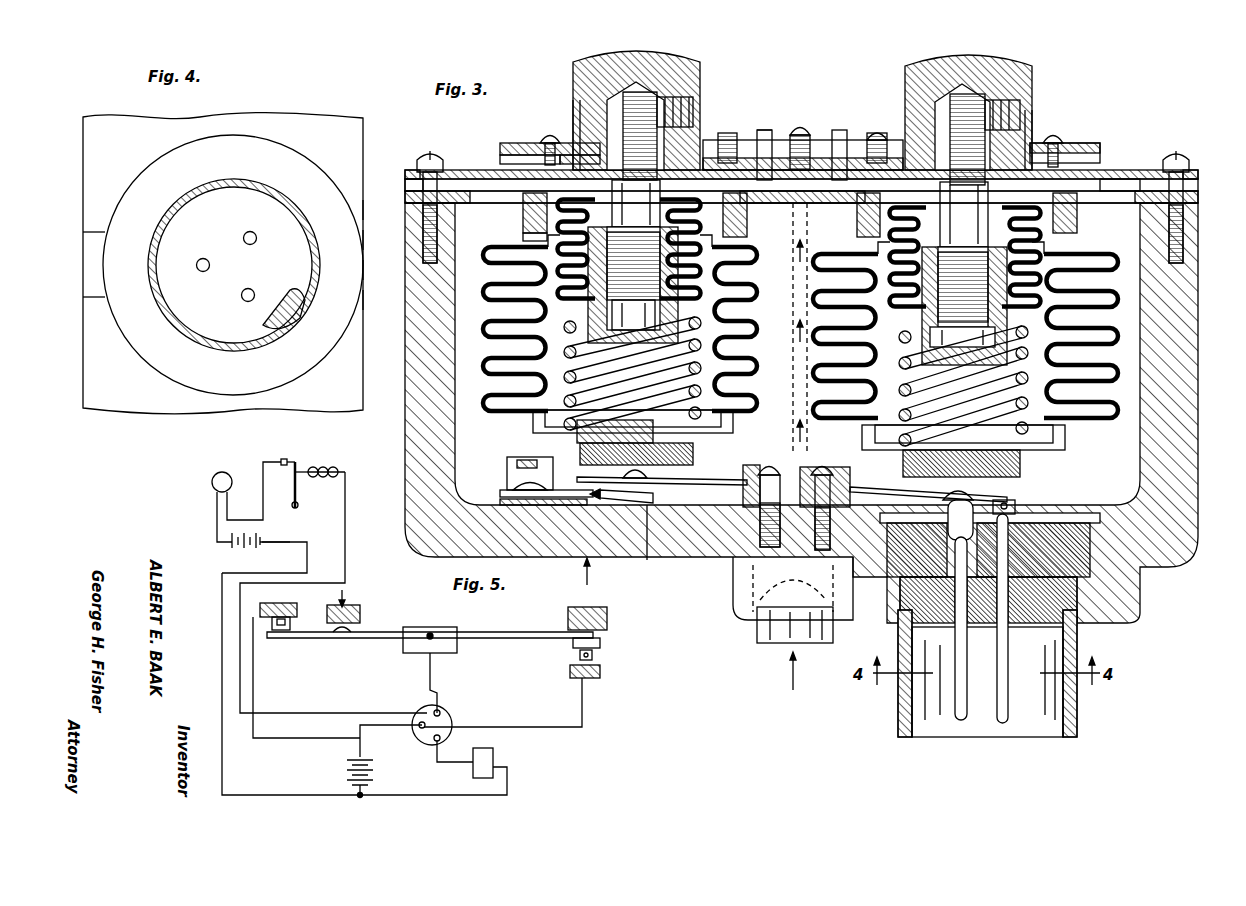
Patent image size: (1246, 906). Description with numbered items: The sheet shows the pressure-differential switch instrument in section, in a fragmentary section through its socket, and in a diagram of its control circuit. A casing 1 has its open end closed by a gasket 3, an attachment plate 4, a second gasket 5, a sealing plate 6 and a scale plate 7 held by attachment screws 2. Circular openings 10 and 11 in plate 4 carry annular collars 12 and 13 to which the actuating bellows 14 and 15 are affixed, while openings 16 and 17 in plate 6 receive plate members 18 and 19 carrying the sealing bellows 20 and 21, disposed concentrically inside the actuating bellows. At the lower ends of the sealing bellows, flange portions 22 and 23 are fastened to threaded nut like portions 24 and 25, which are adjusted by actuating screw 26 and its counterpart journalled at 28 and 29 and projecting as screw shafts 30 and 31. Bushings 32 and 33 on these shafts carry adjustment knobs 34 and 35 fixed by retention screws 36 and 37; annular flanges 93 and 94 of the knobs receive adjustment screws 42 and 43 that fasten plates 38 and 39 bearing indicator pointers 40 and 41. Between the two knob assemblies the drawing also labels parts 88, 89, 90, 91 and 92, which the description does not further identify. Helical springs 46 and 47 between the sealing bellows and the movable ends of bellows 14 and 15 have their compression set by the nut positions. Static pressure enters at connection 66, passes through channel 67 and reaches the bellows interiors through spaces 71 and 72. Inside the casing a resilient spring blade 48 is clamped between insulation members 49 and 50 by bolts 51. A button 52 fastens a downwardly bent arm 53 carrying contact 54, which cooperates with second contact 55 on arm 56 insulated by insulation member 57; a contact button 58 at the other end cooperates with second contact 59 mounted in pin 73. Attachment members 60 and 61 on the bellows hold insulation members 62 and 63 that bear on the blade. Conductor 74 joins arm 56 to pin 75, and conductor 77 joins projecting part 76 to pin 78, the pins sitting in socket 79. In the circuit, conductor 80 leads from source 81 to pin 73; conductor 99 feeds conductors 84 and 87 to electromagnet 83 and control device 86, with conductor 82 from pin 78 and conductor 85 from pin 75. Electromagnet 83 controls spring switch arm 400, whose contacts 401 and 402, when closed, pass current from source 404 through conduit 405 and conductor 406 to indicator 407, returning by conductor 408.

In FIG. 3, the casing 1 is at (1185, 320).
In FIG. 4, the casing 1 is at (118, 403).
In FIG. 3, the attachment screws 2 is at (428, 158).
In FIG. 3, the gasket 3 is at (405, 210).
In FIG. 4, the gasket 3 is at (233, 265).
In FIG. 3, the attachment plate 4 is at (405, 198).
In FIG. 3, the second gasket 5 is at (405, 185).
In FIG. 3, the sealing plate 6 is at (405, 174).
In FIG. 3, the scale plate 7 is at (410, 170).
In FIG. 3, the circular opening 10 is at (520, 170).
In FIG. 3, the circular opening 11 is at (1110, 182).
In FIG. 3, the annular collar 12 is at (523, 205).
In FIG. 3, the annular collar 13 is at (1077, 215).
In FIG. 3, the actuating bellows 14 is at (490, 392).
In FIG. 3, the actuating bellows 15 is at (1100, 422).
In FIG. 3, the circular opening 16 is at (636, 203).
In FIG. 3, the circular opening 17 is at (964, 214).
In FIG. 3, the plate member 18 is at (710, 140).
In FIG. 3, the plate member 19 is at (882, 134).
In FIG. 3, the sealing bellows 20 is at (698, 258).
In FIG. 3, the sealing bellows 21 is at (893, 262).
In FIG. 3, the annular flange portion 22 is at (556, 290).
In FIG. 3, the annular flange portion 23 is at (1068, 320).
In FIG. 3, the nut like portion 24 is at (590, 355).
In FIG. 3, the nut like portion 25 is at (930, 360).
In FIG. 3, the actuating screw 26 is at (588, 238).
In FIG. 3, the journal 28 is at (575, 120).
In FIG. 3, the journal 29 is at (1028, 140).
In FIG. 3, the screw shaft 30 is at (660, 97).
In FIG. 3, the screw shaft 31 is at (988, 102).
In FIG. 3, the bushing 32 is at (620, 110).
In FIG. 3, the bushing 33 is at (948, 115).
In FIG. 3, the adjustment knob 34 is at (612, 58).
In FIG. 3, the adjustment knob 35 is at (945, 60).
In FIG. 3, the retention screw 36 is at (693, 105).
In FIG. 3, the retention screw 37 is at (1020, 110).
In FIG. 3, the plate 38 is at (548, 132).
In FIG. 3, the plate 39 is at (1055, 132).
In FIG. 3, the indicator pointer 40 is at (505, 146).
In FIG. 3, the indicator pointer 41 is at (1090, 160).
In FIG. 3, the adjustment screw 42 is at (765, 130).
In FIG. 3, the adjustment screw 43 is at (1070, 143).
In FIG. 3, the helical spring 46 is at (545, 343).
In FIG. 3, the helical spring 47 is at (1066, 360).
In FIG. 3, the resilient spring blade 48 is at (710, 479).
In FIG. 5, the resilient spring blade 48 is at (505, 631).
In FIG. 3, the insulation member 49 is at (743, 493).
In FIG. 3, the insulation member 50 is at (850, 472).
In FIG. 3, the bolts 51 is at (770, 460).
In FIG. 3, the button 52 is at (655, 497).
In FIG. 3, the downwardly bent arm 53 is at (580, 487).
In FIG. 3, the contact 54 is at (515, 486).
In FIG. 5, the contact 54 is at (285, 630).
In FIG. 3, the second contact 55 is at (510, 468).
In FIG. 5, the second contact 55 is at (288, 606).
In FIG. 3, the arm 56 is at (523, 456).
In FIG. 3, the insulation member 57 is at (500, 494).
In FIG. 3, the contact button 58 is at (975, 494).
In FIG. 5, the contact button 58 is at (600, 644).
In FIG. 3, the second contact 59 is at (1015, 508).
In FIG. 5, the second contact 59 is at (593, 657).
In FIG. 3, the attachment member 60 is at (695, 452).
In FIG. 3, the attachment member 61 is at (903, 462).
In FIG. 3, the insulation member 62 is at (680, 450).
In FIG. 3, the insulation member 63 is at (1005, 490).
In FIG. 3, the static pressure connection 66 is at (757, 628).
In FIG. 3, the channel 67 is at (733, 578).
In FIG. 3, the space 71 is at (535, 222).
In FIG. 3, the space 72 is at (857, 215).
In FIG. 3, the pin 73 is at (960, 722).
In FIG. 4, the pin 73 is at (202, 258).
In FIG. 5, the pin 73 is at (425, 724).
In FIG. 3, the electrical conductor 74 is at (647, 562).
In FIG. 5, the electrical conductor 74 is at (270, 738).
In FIG. 4, the pin 75 is at (250, 231).
In FIG. 5, the pin 75 is at (435, 740).
In FIG. 5, the projecting part 76 is at (432, 632).
In FIG. 3, the electrical conductor 77 is at (980, 510).
In FIG. 5, the electrical conductor 77 is at (432, 668).
In FIG. 3, the pin 78 is at (1003, 725).
In FIG. 4, the pin 78 is at (241, 296).
In FIG. 5, the pin 78 is at (440, 710).
In FIG. 3, the socket 79 is at (1077, 637).
In FIG. 4, the socket 79 is at (240, 195).
In FIG. 5, the electrical conductor 80 is at (375, 725).
In FIG. 5, the source of electrical energy 81 is at (373, 775).
In FIG. 5, the conductor 82 is at (346, 557).
In FIG. 5, the electromagnet 83 is at (334, 466).
In FIG. 5, the conductor 84 is at (307, 525).
In FIG. 5, the electrical conductor 85 is at (440, 752).
In FIG. 5, the electrical control device 86 is at (493, 755).
In FIG. 5, the conductor 87 is at (455, 795).
In FIG. 3, the valve plate 88 is at (785, 158).
In FIG. 3, the valve pin 89 is at (766, 128).
In FIG. 3, the valve pin 90 is at (840, 130).
In FIG. 3, the valve screw 91 is at (800, 135).
In FIG. 3, the valve head 92 is at (810, 130).
In FIG. 3, the annular flange 93 is at (727, 133).
In FIG. 3, the annular flange 94 is at (875, 133).
In FIG. 5, the conductor 99 is at (358, 795).
In FIG. 5, the spring switch arm 400 is at (292, 495).
In FIG. 5, the contact 401 is at (295, 462).
In FIG. 5, the contact 402 is at (282, 458).
In FIG. 5, the source of energy 404 is at (232, 545).
In FIG. 5, the conduit 405 is at (278, 545).
In FIG. 5, the conductor 406 is at (263, 470).
In FIG. 5, the indicator 407 is at (214, 478).
In FIG. 5, the conductor 408 is at (217, 513).